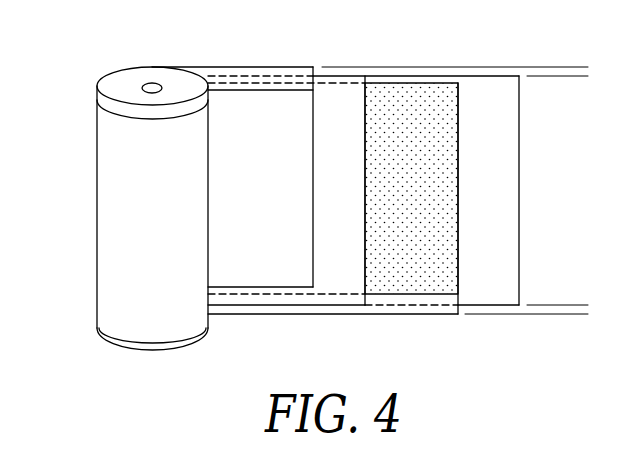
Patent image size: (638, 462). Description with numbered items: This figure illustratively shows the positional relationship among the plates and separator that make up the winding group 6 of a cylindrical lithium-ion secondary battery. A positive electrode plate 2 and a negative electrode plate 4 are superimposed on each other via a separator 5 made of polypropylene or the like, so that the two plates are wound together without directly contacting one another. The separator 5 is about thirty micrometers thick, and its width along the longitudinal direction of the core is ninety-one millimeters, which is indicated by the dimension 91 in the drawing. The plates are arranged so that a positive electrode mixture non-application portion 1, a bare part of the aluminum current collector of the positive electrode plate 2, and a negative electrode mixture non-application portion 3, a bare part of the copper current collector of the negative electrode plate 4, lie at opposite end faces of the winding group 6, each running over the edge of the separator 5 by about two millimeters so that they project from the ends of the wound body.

The positive electrode mixture non-application portion 1 is at (97, 96).
The positive electrode plate 2 is at (570, 67).
The negative electrode mixture non-application portion 3 is at (97, 328).
The negative electrode plate 4 is at (430, 102).
The separator 5 is at (486, 291).
The winding group 6 is at (127, 197).
The length dimension 91 is at (570, 76).